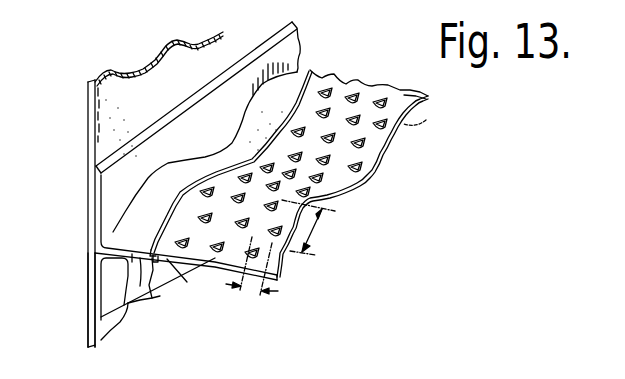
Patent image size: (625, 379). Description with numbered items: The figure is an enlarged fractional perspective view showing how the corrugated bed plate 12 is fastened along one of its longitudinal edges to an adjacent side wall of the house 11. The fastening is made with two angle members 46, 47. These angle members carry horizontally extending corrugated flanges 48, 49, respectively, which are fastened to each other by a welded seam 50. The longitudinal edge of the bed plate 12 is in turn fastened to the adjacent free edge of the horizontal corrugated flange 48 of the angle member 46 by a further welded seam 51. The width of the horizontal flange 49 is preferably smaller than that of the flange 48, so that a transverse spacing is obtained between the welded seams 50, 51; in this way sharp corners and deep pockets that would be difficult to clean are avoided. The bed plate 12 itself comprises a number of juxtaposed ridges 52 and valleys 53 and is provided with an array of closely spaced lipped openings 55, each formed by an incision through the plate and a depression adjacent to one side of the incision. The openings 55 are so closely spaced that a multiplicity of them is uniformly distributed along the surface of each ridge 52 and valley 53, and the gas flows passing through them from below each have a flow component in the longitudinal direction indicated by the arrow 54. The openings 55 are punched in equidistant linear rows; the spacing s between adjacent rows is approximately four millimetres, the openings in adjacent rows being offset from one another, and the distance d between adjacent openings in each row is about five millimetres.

The house 11 is at (95, 125).
The corrugated bed plate 12 is at (384, 152).
The angle member 46 is at (97, 210).
The angle member 47 is at (97, 305).
The horizontal corrugated flange 48 is at (155, 265).
The horizontal corrugated flange 49 is at (121, 323).
The welded seam 50 is at (150, 300).
The welded seam 51 is at (312, 71).
The ridge 52 is at (371, 78).
The valley 53 is at (366, 177).
The arrow 54 is at (174, 139).
The lipped opening 55 is at (432, 122).
The distance between adjacent openings d is at (310, 227).
The spacing between adjacent rows s is at (252, 277).